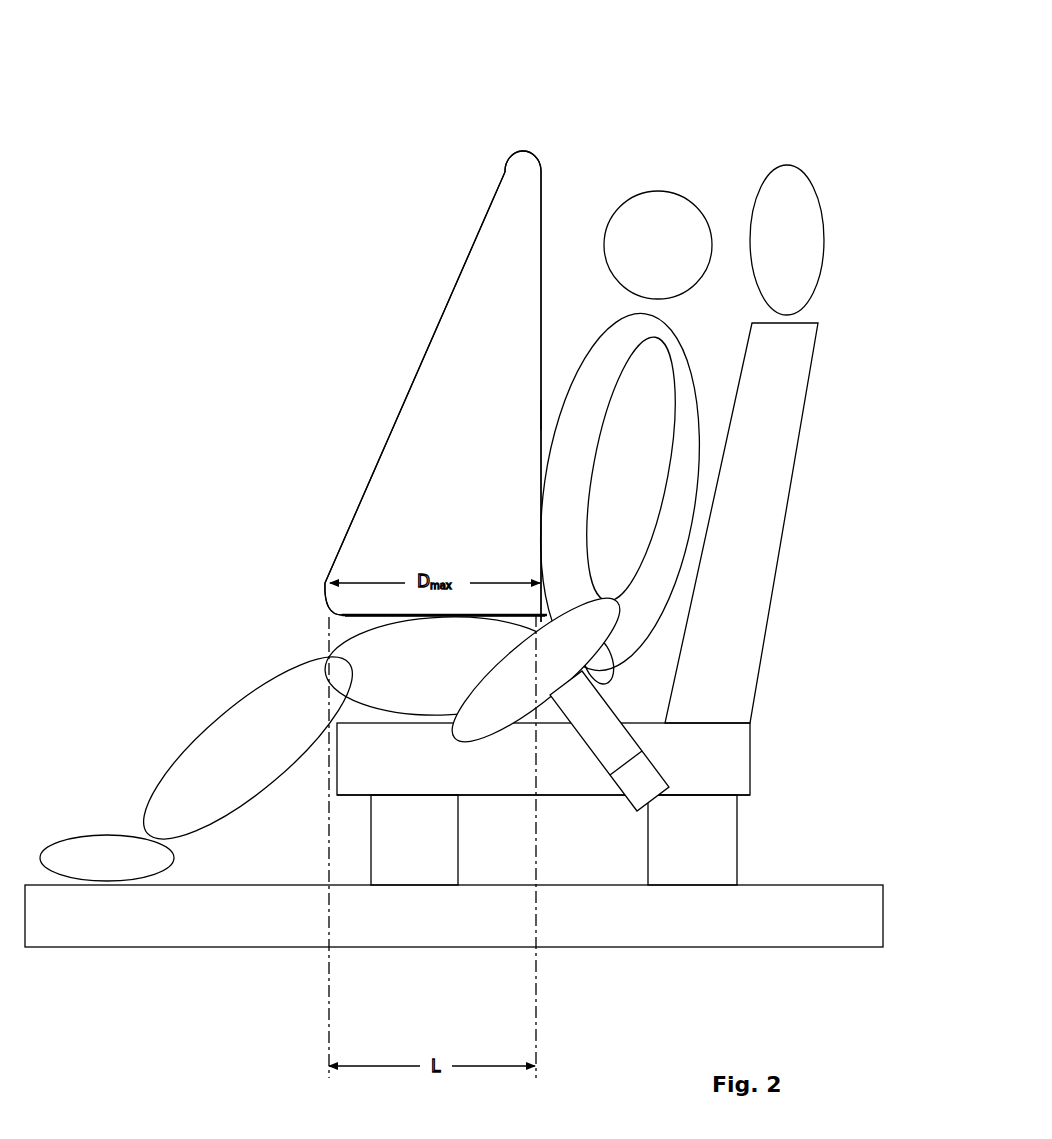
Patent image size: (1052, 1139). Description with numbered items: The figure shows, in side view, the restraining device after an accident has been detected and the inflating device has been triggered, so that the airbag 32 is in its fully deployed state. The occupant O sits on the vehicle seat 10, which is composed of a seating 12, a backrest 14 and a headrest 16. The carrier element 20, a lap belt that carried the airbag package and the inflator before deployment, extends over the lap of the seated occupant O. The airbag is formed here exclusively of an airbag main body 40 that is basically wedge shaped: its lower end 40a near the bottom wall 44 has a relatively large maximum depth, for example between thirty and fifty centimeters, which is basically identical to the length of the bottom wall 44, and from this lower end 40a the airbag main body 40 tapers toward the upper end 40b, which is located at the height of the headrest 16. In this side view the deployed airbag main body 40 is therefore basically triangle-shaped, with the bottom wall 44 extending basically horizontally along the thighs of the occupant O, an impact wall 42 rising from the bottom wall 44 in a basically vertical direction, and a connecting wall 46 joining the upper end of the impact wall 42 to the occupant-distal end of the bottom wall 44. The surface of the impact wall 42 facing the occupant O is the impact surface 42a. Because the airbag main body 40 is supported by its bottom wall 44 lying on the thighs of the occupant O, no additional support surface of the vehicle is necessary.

The vehicle seat 10 is at (733, 741).
The seating 12 is at (563, 778).
The backrest 14 is at (780, 446).
The headrest 16 is at (808, 235).
The carrier element 20 is at (598, 725).
The airbag 32 is at (350, 175).
The airbag main body 40 is at (430, 448).
The lower end of the airbag main body 40a is at (480, 598).
The upper end of the airbag main body 40b is at (520, 197).
The impact wall 42 is at (545, 265).
The impact surface 42a is at (545, 412).
The bottom wall 44 is at (328, 583).
The connecting wall 46 is at (448, 295).
The occupant O is at (645, 375).